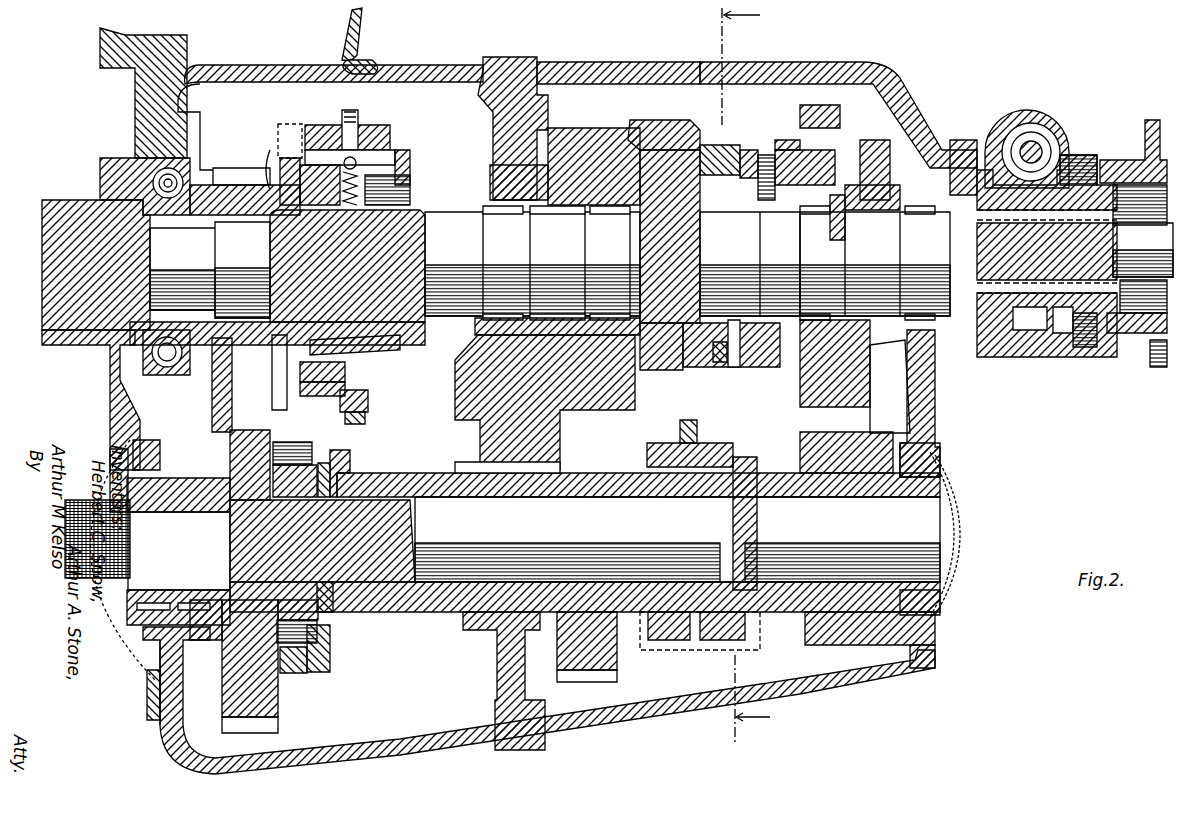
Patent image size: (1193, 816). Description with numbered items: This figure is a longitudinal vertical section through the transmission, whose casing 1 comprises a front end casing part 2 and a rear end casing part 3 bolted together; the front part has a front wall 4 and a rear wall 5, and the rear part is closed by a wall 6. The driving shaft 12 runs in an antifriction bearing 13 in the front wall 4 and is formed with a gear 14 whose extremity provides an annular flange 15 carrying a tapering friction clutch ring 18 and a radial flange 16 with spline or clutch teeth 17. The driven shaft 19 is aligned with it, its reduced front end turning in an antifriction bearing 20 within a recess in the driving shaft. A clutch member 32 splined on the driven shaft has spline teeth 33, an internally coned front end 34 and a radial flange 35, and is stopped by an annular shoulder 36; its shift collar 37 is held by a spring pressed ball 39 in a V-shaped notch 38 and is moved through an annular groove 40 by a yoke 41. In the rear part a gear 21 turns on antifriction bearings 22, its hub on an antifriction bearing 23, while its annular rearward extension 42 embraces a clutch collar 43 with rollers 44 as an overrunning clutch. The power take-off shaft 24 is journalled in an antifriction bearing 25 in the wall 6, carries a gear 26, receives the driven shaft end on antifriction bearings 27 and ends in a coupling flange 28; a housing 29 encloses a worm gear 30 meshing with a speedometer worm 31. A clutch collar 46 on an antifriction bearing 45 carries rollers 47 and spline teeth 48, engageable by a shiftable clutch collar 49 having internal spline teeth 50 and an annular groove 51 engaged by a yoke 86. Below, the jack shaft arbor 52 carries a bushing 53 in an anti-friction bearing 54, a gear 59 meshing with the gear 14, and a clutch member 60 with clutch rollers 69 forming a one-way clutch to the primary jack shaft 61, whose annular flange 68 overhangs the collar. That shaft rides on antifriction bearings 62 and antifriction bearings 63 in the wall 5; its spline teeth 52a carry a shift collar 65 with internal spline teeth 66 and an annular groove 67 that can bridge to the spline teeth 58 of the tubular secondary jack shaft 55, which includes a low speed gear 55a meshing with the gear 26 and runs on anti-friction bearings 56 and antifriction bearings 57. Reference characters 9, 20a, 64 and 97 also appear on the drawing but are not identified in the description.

The casing 1 is at (535, 50).
The front end casing part 2 is at (420, 66).
The rear end casing part 3 is at (800, 62).
The front wall 4 is at (539, 687).
The rear wall 5 is at (490, 655).
The rear wall 6 is at (930, 404).
The casing wall 9 is at (180, 682).
The driving shaft 12 is at (50, 284).
The antifriction bearing 13 is at (150, 165).
The gear 14 is at (242, 182).
The annular flange 15 is at (292, 167).
The radial flange 16 is at (280, 154).
The spline or clutch teeth 17 is at (288, 372).
The friction clutch ring 18 is at (341, 414).
The driven shaft 19 is at (455, 212).
The antifriction bearing 20 is at (182, 240).
The bearing cap 20a is at (540, 115).
The gear 21 is at (598, 122).
The antifriction bearings 22 is at (603, 213).
The antifriction bearing 23 is at (540, 205).
The power take-off shaft 24 is at (1125, 290).
The antifriction bearing 25 is at (875, 152).
The gear 26 is at (800, 102).
The antifriction bearings 27 is at (812, 216).
The coupling flange 28 is at (1146, 126).
The housing 29 is at (1070, 333).
The worm gear 30 is at (1025, 330).
The worm 31 is at (1052, 140).
The clutch member 32 is at (390, 371).
The spline teeth 33 is at (395, 385).
The internally coned front end 34 is at (355, 345).
The radial shoulder or flange 35 is at (408, 158).
The annular shoulder 36 is at (405, 192).
The shift collar 37 is at (385, 416).
The V-shaped recess or notch 38 is at (380, 152).
The ball 39 is at (360, 165).
The annular groove 40 is at (362, 128).
The yoke 41 is at (342, 112).
The annular rearward extension 42 is at (648, 122).
The clutch collar 43 is at (648, 208).
The rollers 44 is at (730, 158).
The antifriction bearing 45 is at (838, 200).
The clutch collar 46 is at (858, 200).
The roller 47 is at (790, 122).
The spline teeth 48 is at (800, 150).
The shiftable clutch collar 49 is at (716, 362).
The internal spline teeth 50 is at (766, 156).
The annular groove 51 is at (738, 367).
The jack shaft arbor 52 is at (677, 539).
The spline teeth 52a is at (667, 638).
The bushing 53 is at (168, 495).
The anti-friction bearing 54 is at (138, 445).
The secondary jack shaft 55 is at (857, 482).
The low speed gear 55a is at (865, 420).
The anti-friction bearings 56 is at (940, 455).
The antifriction bearings 57 is at (760, 490).
The spline teeth 58 is at (752, 618).
The gear 59 is at (280, 690).
The clutch member 60 is at (325, 645).
The primary jack shaft 61 is at (554, 490).
The antifriction bearings 62 is at (396, 478).
The antifriction bearings 63 is at (493, 490).
The block 64 is at (610, 672).
The shift collar 65 is at (704, 640).
The internal spline teeth 66 is at (735, 460).
The annular groove 67 is at (680, 424).
The annular flange 68 is at (318, 660).
The clutch rollers 69 is at (314, 450).
The yoke 86 is at (748, 150).
The spring 97 is at (808, 372).